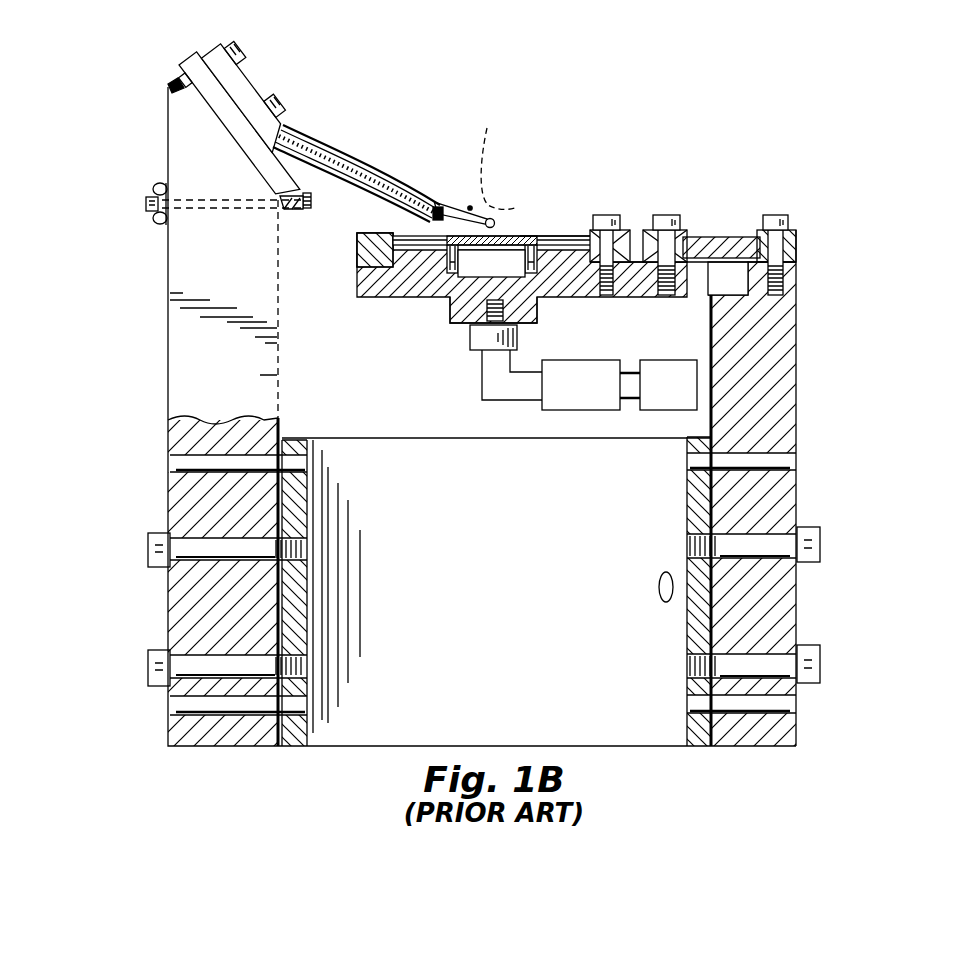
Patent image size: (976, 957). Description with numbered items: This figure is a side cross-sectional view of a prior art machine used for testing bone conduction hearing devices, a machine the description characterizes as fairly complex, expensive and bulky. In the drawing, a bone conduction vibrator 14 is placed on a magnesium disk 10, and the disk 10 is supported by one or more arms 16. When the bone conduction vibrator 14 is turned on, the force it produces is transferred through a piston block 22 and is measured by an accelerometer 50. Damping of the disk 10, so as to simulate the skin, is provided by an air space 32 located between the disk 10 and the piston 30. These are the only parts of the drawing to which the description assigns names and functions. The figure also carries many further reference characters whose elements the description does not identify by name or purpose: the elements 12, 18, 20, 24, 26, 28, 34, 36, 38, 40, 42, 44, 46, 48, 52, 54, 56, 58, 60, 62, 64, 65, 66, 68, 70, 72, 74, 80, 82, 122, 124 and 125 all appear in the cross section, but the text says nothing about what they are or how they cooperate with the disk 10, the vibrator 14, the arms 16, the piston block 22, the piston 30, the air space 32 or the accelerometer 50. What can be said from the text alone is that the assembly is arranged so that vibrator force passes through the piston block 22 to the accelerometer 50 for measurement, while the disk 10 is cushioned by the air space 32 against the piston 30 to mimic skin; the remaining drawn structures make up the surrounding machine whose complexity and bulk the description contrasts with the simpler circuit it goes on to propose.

The magnesium disk 10 is at (530, 238).
The sensing element 12 is at (507, 232).
The bone conduction vibrator 14 is at (496, 156).
The arm 16 is at (556, 235).
The mounting block 18 is at (383, 233).
The probe tip 20 is at (433, 220).
The piston block 22 is at (357, 280).
The clamp block 24 is at (630, 243).
The bolt 26 is at (600, 215).
The cavity 28 is at (506, 274).
The piston 30 is at (537, 298).
The air space 32 is at (470, 206).
The spacer block 34 is at (704, 262).
The bolt 36 is at (655, 215).
The clamp block 38 is at (680, 230).
The bolt 40 is at (790, 218).
The clamp block 42 is at (797, 238).
The right wall 44 is at (795, 408).
The wall bolt 46 is at (817, 530).
The chamber 48 is at (390, 440).
The accelerometer 50 is at (470, 338).
The amplifier 52 is at (582, 360).
The indicator 54 is at (658, 360).
The left wall 56 is at (278, 378).
The mounting plate 58 is at (212, 110).
The guide strip 60 is at (258, 73).
The bracket nut 62 is at (321, 198).
The probe holder 64 is at (448, 234).
The cable core 65 is at (367, 170).
The clamp bar 66 is at (733, 240).
The cable sheath 68 is at (333, 143).
The left slot 70 is at (450, 288).
The right slot 72 is at (555, 264).
The body left portion 74 is at (420, 273).
The wall bolt 80 is at (150, 532).
The lug 82 is at (184, 58).
The corner bracket 122 is at (170, 84).
The lower bracket 124 is at (290, 212).
The wing nut 125 is at (156, 183).